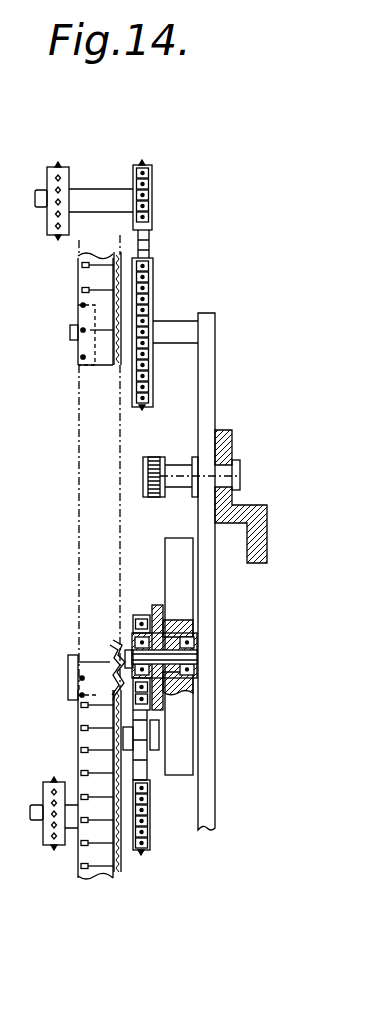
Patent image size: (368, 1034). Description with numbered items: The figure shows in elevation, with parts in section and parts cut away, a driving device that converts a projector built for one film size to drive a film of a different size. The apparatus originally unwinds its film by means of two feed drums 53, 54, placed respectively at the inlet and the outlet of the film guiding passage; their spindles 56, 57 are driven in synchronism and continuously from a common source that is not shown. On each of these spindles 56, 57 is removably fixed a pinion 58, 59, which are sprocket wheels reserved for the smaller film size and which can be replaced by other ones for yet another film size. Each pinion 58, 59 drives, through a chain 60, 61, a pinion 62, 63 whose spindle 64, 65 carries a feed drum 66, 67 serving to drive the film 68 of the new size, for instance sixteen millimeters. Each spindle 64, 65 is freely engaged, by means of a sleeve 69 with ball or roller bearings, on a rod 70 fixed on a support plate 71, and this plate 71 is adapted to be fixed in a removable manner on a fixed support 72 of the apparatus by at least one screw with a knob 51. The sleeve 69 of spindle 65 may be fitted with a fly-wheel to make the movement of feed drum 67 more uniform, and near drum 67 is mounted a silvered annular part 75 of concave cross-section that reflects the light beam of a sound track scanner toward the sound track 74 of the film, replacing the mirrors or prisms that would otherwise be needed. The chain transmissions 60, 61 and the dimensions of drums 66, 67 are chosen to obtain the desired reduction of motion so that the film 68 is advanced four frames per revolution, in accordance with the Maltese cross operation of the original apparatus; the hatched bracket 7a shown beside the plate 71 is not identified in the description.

The frame bracket 7a is at (232, 458).
The knob 51 is at (172, 470).
The feed drum 53 is at (62, 180).
The feed drum 54 is at (50, 846).
The spindle 56 is at (36, 199).
The spindle 57 is at (38, 820).
The pinion 58 is at (152, 205).
The pinion 59 is at (150, 830).
The chain 60 is at (149, 255).
The chain 61 is at (148, 770).
The pinion 62 is at (153, 300).
The pinion 63 is at (143, 620).
The spindle 64 is at (70, 332).
The spindle 65 is at (128, 655).
The feed drum 66 is at (75, 352).
The feed drum 67 is at (68, 662).
The film 68 is at (92, 280).
The sleeve 69 is at (190, 640).
The rod 70 is at (185, 657).
The support plate 71 is at (212, 392).
The fixed support 72 is at (178, 582).
The sound track 74 is at (120, 860).
The silvered annular part 75 is at (112, 660).